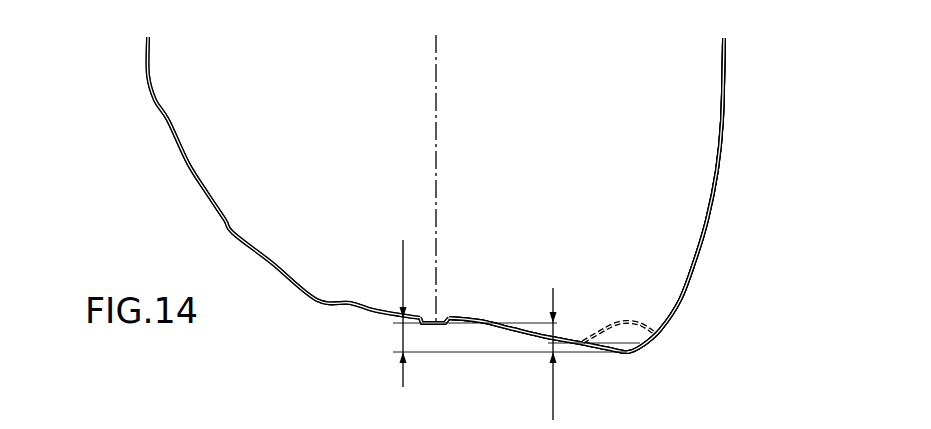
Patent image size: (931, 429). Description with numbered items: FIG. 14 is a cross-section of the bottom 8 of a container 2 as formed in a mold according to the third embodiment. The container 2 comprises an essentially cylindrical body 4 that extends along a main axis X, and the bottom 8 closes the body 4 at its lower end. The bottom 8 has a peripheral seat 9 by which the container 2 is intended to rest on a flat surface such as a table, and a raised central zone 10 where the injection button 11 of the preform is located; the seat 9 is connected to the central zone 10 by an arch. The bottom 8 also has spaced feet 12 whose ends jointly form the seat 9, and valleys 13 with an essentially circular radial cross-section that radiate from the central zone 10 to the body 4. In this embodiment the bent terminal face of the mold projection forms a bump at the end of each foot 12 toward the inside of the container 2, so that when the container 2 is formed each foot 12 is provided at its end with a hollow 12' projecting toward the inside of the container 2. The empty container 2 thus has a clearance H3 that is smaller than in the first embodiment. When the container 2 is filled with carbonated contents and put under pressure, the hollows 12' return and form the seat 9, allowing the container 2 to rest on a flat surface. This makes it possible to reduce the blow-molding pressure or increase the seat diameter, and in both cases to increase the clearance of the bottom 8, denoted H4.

The container 2 is at (734, 116).
The body 4 is at (726, 54).
The bottom 8 is at (312, 308).
The peripheral seat 9 is at (633, 360).
The raised central zone 10 is at (459, 304).
The injection button 11 is at (440, 325).
The foot 12 is at (586, 195).
The hollow 12' is at (600, 310).
The valley 13 is at (272, 263).
The main axis X is at (437, 155).
The clearance H3 is at (543, 354).
The clearance of the bottom H4 is at (504, 313).